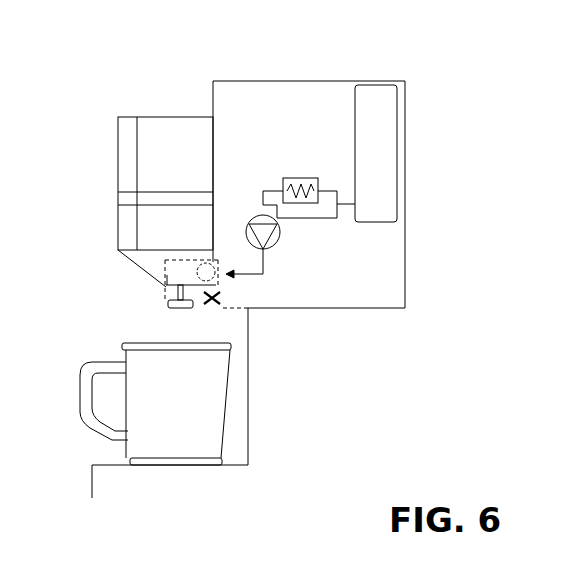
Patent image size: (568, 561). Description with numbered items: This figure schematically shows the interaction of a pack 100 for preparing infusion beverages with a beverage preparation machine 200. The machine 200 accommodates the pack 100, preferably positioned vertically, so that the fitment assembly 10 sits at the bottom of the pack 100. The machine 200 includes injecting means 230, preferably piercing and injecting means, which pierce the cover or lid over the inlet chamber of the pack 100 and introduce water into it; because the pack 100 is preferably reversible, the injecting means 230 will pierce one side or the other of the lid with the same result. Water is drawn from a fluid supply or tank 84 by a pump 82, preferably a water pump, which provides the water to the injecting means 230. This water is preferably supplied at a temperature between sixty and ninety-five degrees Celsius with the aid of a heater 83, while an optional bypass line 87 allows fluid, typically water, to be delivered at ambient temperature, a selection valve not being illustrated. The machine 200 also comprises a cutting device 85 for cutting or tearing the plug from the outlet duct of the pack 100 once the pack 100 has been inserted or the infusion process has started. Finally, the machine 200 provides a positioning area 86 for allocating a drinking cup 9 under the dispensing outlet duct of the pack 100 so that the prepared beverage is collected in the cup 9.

The pack 100 is at (103, 153).
The machine 200 is at (445, 160).
The heater 83 is at (298, 178).
The fluid supply or tank 84 is at (375, 140).
The bypass line 87 is at (327, 218).
The pump 82 is at (317, 249).
The injecting means 230 is at (252, 275).
The fitment assembly 10 is at (169, 279).
The cutting device 85 is at (208, 302).
The drinking cup 9 is at (205, 453).
The positioning area 86 is at (165, 466).